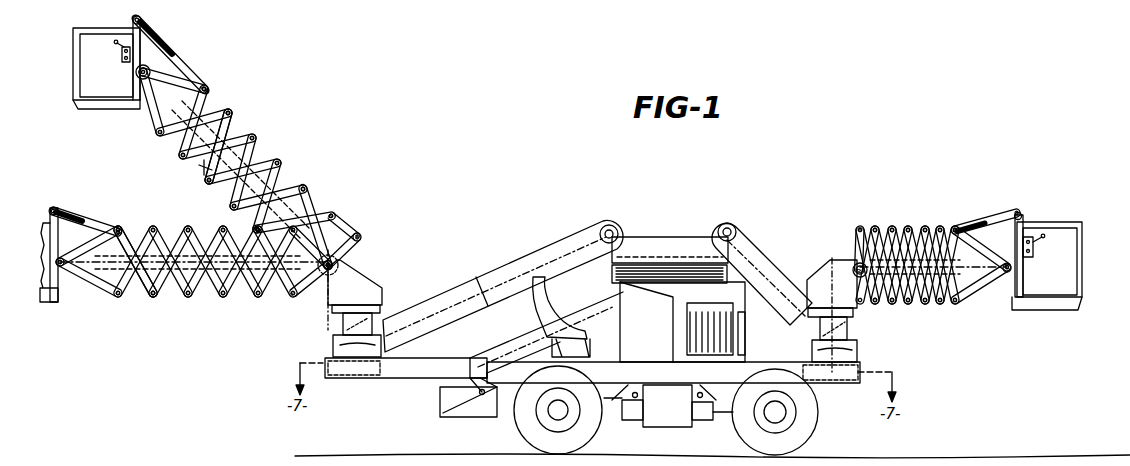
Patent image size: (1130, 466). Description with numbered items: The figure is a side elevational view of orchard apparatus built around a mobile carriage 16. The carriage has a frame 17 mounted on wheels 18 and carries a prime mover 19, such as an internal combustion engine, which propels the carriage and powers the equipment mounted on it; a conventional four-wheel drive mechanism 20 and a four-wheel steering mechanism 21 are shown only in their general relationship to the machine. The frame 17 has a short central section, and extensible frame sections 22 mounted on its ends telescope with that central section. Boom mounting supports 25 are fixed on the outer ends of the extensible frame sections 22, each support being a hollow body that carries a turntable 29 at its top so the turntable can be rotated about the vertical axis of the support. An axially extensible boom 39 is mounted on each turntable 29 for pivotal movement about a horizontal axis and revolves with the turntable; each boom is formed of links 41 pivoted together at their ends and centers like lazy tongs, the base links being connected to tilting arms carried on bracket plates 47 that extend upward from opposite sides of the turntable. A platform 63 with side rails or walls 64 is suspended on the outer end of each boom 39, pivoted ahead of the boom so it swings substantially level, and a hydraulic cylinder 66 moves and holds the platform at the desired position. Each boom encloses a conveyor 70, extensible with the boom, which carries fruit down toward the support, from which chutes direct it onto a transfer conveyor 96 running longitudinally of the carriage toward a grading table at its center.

The mobile carriage 16 is at (507, 348).
The frame 17 is at (653, 365).
The wheels 18 is at (524, 430).
The prime mover 19 is at (738, 340).
The four-wheel drive mechanism 20 is at (677, 424).
The four-wheel steering mechanism 21 is at (597, 284).
The extensible frame sections 22 is at (405, 372).
The boom mounting supports 25 is at (340, 340).
The turntable 29 is at (382, 297).
The axially extensible boom 39 is at (262, 144).
The links 41 is at (208, 170).
The bracket plates 47 is at (350, 277).
The platform 63 is at (105, 109).
The side rails or walls 64 is at (77, 60).
The hydraulic cylinder 66 is at (183, 67).
The conveyor 70 is at (232, 125).
The transfer conveyor 96 is at (493, 274).